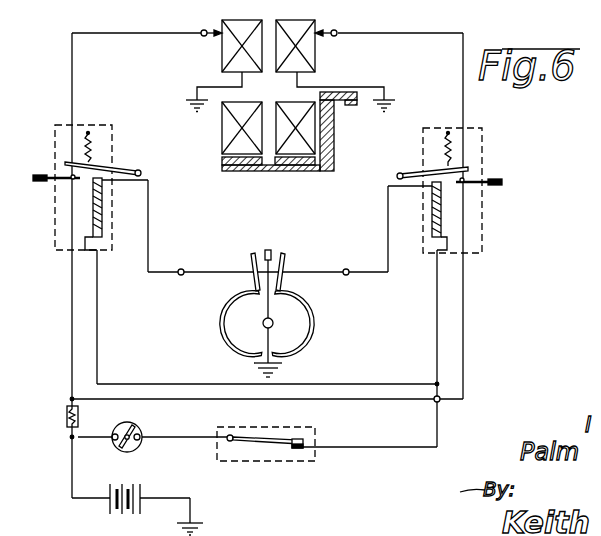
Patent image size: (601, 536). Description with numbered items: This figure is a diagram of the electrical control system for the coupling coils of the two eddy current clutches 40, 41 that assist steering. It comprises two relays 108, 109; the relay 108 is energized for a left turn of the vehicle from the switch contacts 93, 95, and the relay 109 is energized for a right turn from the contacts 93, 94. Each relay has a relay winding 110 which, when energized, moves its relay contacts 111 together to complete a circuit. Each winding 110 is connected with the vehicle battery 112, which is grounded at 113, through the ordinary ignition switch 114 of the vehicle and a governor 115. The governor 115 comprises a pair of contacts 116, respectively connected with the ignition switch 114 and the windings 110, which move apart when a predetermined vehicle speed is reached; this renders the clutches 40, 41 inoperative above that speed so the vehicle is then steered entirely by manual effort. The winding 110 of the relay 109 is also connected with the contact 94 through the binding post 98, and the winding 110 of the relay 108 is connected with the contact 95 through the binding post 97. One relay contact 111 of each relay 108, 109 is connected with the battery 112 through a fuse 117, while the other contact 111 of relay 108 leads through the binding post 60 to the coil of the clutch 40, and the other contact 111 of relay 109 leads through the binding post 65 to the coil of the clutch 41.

The eddy current clutch 40 is at (218, 126).
The eddy current clutch 41 is at (330, 131).
The binding post 60 is at (203, 37).
The binding post 65 is at (337, 37).
The switch contact 93 is at (270, 248).
The contact 94 is at (284, 252).
The contact 95 is at (253, 252).
The binding post 97 is at (181, 269).
The binding post 98 is at (349, 269).
The relay 108 is at (87, 213).
The relay 109 is at (464, 214).
The relay winding 110 is at (102, 233).
The relay contacts 111 is at (62, 170).
The vehicle battery 112 is at (145, 492).
The ground 113 is at (196, 518).
The ignition switch 114 is at (140, 425).
The governor 115 is at (296, 433).
The contacts 116 is at (298, 436).
The fuse 117 is at (65, 418).